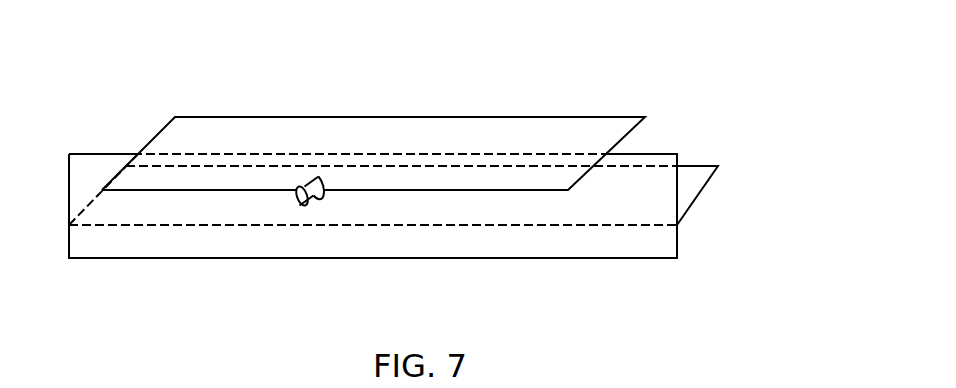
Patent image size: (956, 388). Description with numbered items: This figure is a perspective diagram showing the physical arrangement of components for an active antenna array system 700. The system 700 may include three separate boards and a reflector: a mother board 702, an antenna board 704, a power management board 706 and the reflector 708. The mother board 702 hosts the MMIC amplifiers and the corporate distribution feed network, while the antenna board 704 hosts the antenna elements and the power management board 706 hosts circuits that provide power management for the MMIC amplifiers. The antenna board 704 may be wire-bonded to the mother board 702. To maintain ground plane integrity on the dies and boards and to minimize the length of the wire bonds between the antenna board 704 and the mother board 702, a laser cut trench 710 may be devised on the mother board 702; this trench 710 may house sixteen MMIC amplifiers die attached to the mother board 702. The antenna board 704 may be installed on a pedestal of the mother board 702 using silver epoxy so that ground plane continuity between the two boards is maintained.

The active antenna array system 700 is at (599, 70).
The mother board 702 is at (583, 175).
The antenna board 704 is at (407, 123).
The power management board 706 is at (155, 250).
The reflector 708 is at (718, 166).
The laser cut trench 710 is at (605, 154).